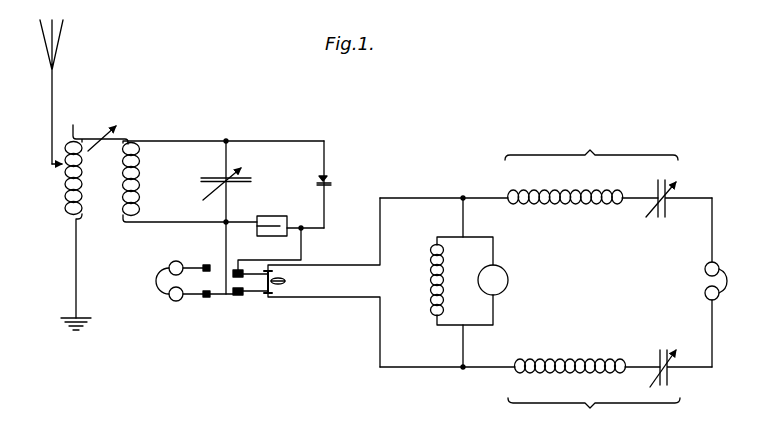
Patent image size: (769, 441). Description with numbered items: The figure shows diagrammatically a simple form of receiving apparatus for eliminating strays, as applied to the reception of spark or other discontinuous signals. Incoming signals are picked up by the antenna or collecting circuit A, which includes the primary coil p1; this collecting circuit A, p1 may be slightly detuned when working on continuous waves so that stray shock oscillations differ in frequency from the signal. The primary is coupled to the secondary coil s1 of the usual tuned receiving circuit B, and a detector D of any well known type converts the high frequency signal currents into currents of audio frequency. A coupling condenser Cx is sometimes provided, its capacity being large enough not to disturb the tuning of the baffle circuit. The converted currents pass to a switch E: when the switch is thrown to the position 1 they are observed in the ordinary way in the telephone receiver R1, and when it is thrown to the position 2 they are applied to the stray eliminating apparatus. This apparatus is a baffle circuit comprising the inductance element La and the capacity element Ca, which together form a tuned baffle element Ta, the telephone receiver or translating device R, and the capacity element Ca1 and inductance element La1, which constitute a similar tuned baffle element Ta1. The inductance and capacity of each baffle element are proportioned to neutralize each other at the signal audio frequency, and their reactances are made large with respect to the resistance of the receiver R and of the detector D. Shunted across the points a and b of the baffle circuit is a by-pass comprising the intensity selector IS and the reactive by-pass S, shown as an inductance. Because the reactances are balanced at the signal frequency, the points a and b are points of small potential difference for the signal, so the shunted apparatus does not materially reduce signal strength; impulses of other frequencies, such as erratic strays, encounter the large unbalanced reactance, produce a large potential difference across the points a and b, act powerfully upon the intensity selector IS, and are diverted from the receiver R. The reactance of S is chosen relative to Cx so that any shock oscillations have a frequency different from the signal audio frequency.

The antenna A is at (40, 92).
The primary coil p1 is at (80, 227).
The secondary coil s1 is at (224, 181).
The tuned receiving circuit B is at (210, 184).
The detector D is at (311, 184).
The coupling condenser Cx is at (290, 214).
The telephone receiver R1 is at (179, 281).
The switch position 1 is at (212, 281).
The switch E is at (262, 273).
The switch position 2 is at (314, 282).
The point a is at (444, 205).
The point b is at (447, 360).
The reactive by-pass S is at (449, 281).
The intensity selector IS is at (493, 280).
The inductance element La is at (583, 184).
The capacity element Ca is at (679, 190).
The tuned baffle element Ta is at (591, 143).
The telephone receiver R is at (728, 282).
The inductance element La1 is at (588, 380).
The capacity element Ca1 is at (680, 379).
The tuned baffle element Ta1 is at (594, 416).